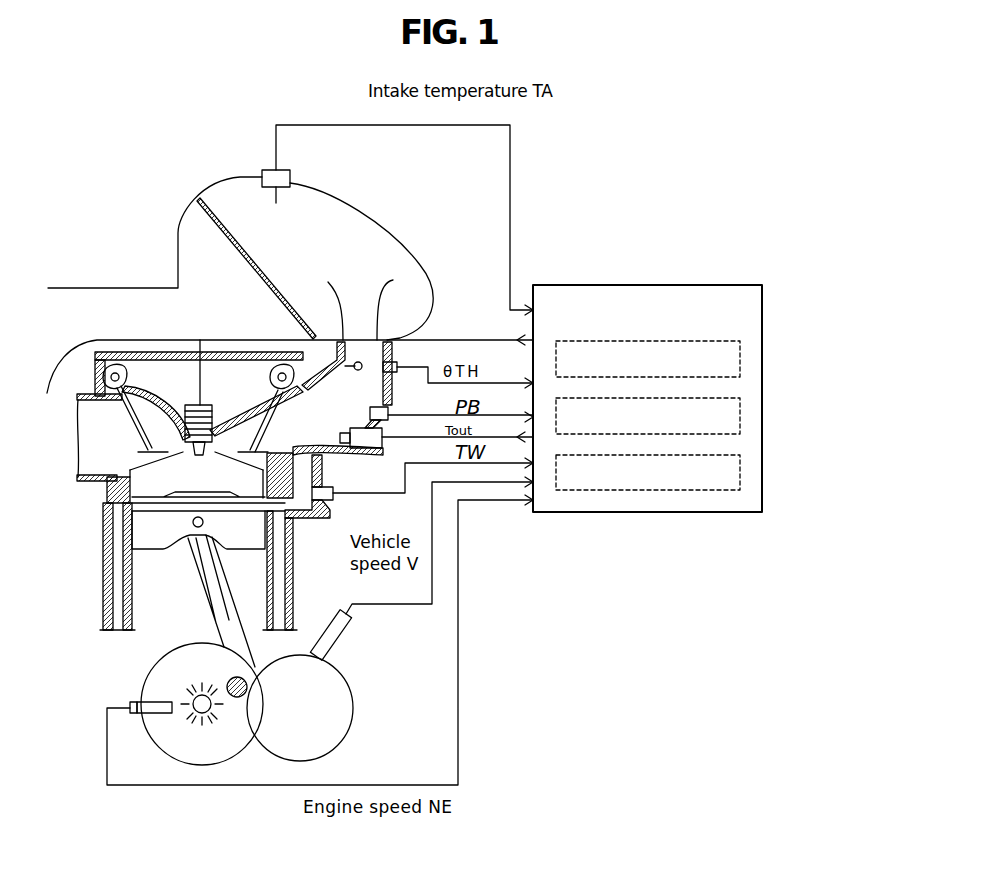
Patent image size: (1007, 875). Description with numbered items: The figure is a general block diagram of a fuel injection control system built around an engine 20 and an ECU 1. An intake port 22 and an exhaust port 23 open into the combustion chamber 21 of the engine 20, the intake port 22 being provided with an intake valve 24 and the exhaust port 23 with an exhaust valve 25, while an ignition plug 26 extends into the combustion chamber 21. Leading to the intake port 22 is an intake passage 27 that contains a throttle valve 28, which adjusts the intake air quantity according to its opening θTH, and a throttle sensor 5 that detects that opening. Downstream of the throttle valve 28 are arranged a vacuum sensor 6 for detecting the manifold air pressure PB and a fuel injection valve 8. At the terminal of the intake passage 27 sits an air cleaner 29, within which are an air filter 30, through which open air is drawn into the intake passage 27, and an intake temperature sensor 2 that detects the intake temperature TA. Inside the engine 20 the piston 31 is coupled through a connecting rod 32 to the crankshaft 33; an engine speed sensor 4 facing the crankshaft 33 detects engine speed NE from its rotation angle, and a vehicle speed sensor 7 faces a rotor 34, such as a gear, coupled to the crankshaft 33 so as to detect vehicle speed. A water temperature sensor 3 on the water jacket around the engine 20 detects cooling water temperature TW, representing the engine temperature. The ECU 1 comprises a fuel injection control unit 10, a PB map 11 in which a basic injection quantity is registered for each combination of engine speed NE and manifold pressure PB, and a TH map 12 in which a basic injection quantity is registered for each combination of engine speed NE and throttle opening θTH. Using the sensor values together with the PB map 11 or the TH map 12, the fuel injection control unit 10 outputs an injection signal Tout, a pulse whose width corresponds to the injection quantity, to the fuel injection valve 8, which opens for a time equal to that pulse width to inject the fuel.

The ECU 1 is at (728, 512).
The intake temperature sensor 2 is at (291, 178).
The water temperature sensor 3 is at (325, 500).
The engine speed sensor 4 is at (137, 702).
The throttle sensor 5 is at (400, 333).
The vacuum sensor 6 is at (370, 405).
The vehicle speed sensor 7 is at (343, 647).
The fuel injection valve 8 is at (382, 448).
The fuel injection control unit 10 is at (738, 355).
The PB map 11 is at (738, 413).
The TH map 12 is at (738, 470).
The engine 20 is at (97, 540).
The combustion chamber 21 is at (115, 487).
The intake port 22 is at (322, 470).
The exhaust port 23 is at (123, 475).
The intake valve 24 is at (251, 457).
The exhaust valve 25 is at (148, 455).
The ignition plug 26 is at (210, 408).
The intake passage 27 is at (308, 345).
The throttle valve 28 is at (373, 338).
The air cleaner 29 is at (417, 253).
The air filter 30 is at (235, 248).
The piston 31 is at (150, 547).
The connecting rod 32 is at (207, 577).
The crankshaft 33 is at (195, 712).
The rotor 34 is at (340, 690).